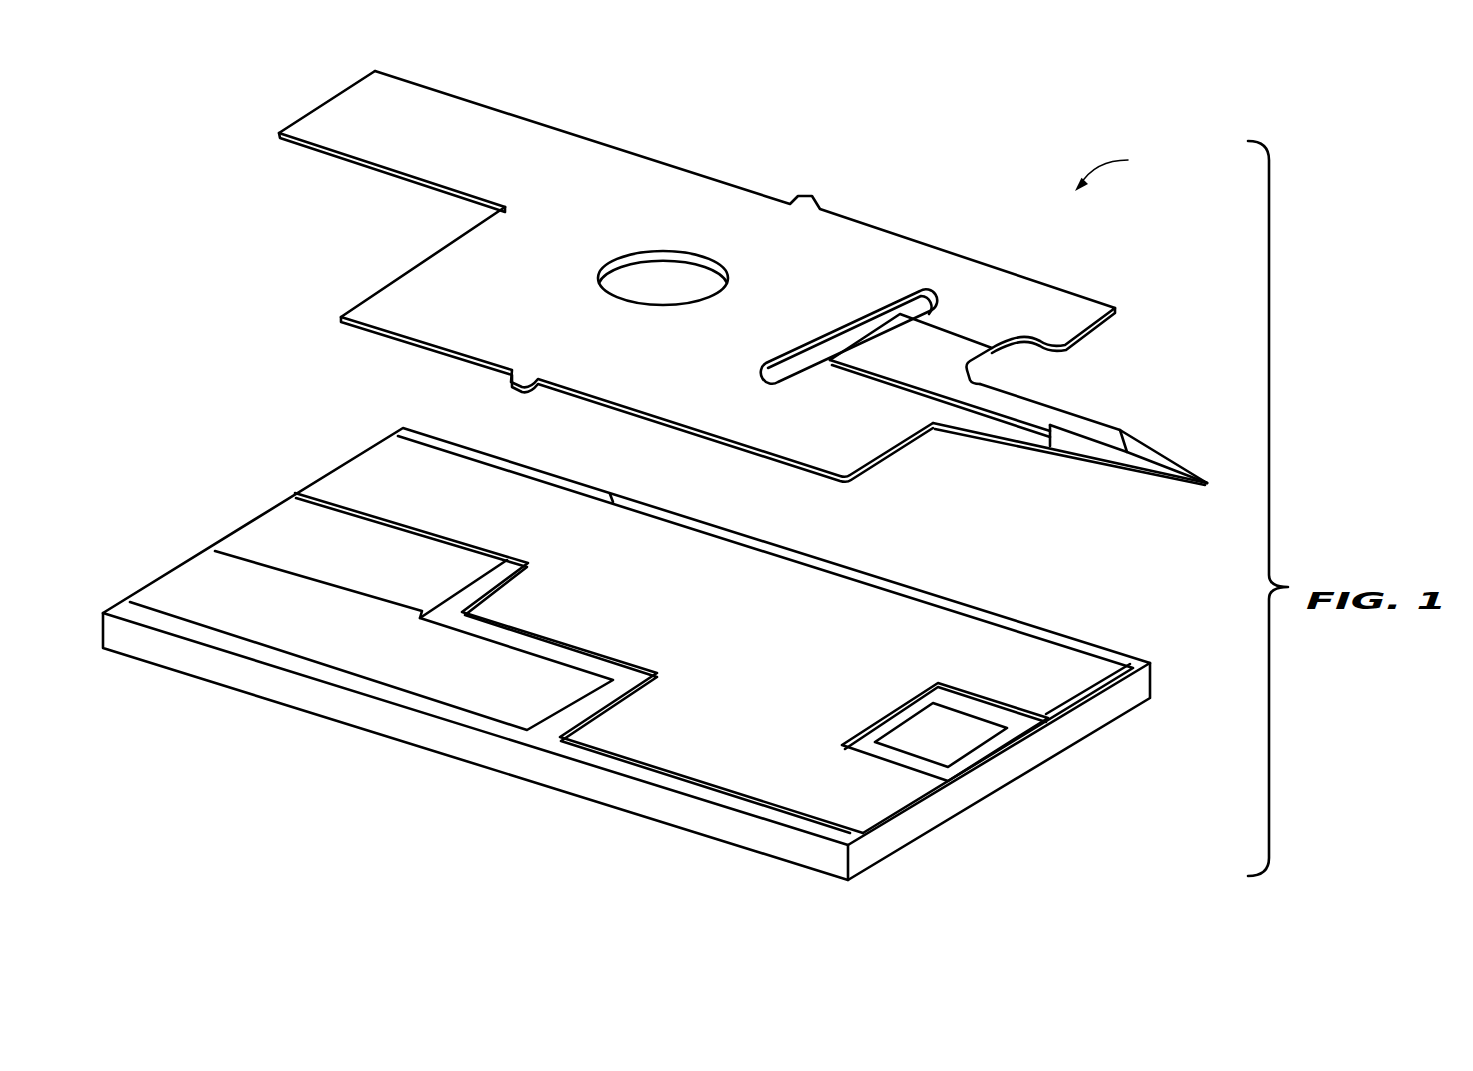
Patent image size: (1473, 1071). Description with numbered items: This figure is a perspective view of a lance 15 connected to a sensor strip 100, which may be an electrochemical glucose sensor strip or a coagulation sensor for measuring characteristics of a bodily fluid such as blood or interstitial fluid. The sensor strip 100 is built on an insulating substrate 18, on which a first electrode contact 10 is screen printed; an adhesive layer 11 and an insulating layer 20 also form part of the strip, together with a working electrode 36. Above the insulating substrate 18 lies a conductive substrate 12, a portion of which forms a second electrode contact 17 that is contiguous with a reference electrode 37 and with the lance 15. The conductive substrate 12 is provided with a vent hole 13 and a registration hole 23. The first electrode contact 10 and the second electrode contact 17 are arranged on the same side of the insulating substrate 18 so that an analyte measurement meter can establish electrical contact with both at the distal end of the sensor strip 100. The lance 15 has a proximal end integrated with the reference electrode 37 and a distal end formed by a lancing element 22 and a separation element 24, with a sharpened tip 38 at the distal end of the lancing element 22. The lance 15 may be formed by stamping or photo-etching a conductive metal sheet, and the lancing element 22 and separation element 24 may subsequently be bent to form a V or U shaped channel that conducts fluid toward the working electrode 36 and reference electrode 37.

The sensor strip 100 is at (1124, 169).
The first electrode contact 10 is at (200, 580).
The adhesive layer 11 is at (770, 572).
The conductive substrate 12 is at (593, 153).
The vent hole 13 is at (905, 303).
The lance 15 is at (1072, 418).
The second electrode contact 17 is at (345, 108).
The insulating substrate 18 is at (293, 692).
The insulating layer 20 is at (550, 740).
The lancing element 22 is at (1133, 440).
The registration hole 23 is at (665, 275).
The separation element 24 is at (1133, 475).
The working electrode 36 is at (943, 740).
The reference electrode 37 is at (997, 350).
The sharpened tip 38 is at (1207, 483).